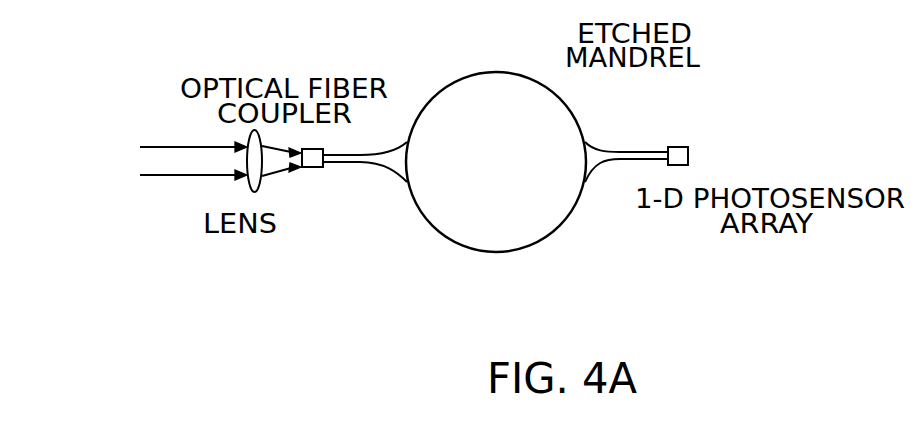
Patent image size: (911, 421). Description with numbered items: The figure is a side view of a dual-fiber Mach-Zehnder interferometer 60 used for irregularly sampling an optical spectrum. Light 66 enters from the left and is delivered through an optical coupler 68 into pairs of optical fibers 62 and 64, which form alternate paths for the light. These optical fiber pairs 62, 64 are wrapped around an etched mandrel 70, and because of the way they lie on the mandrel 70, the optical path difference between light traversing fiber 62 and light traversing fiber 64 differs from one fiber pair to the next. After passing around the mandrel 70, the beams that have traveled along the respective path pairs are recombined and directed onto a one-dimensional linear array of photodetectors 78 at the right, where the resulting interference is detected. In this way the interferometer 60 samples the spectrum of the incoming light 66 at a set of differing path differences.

The Mach-Zehnder interferometer 60 is at (327, 290).
The optical fiber 62 is at (494, 72).
The optical fiber 64 is at (448, 238).
The light 66 is at (163, 165).
The optical coupler 68 is at (315, 168).
The mandrel 70 is at (502, 163).
The one-dimensional linear array of photodetectors 78 is at (685, 150).